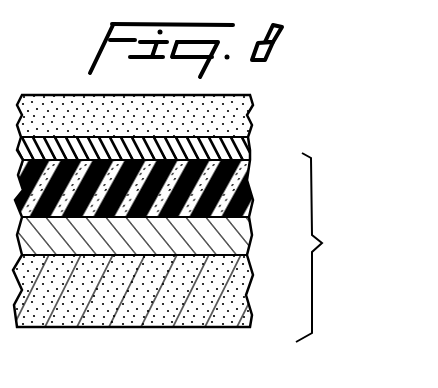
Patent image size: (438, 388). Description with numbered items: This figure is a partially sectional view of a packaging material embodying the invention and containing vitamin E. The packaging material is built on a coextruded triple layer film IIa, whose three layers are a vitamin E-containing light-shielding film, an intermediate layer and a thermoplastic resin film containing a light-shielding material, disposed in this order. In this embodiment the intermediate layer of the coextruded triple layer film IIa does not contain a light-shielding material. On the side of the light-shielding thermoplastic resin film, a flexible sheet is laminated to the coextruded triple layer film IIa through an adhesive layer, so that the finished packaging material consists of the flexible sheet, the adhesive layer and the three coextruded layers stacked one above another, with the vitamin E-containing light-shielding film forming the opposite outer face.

The coextruded triple layer film IIa is at (330, 247).